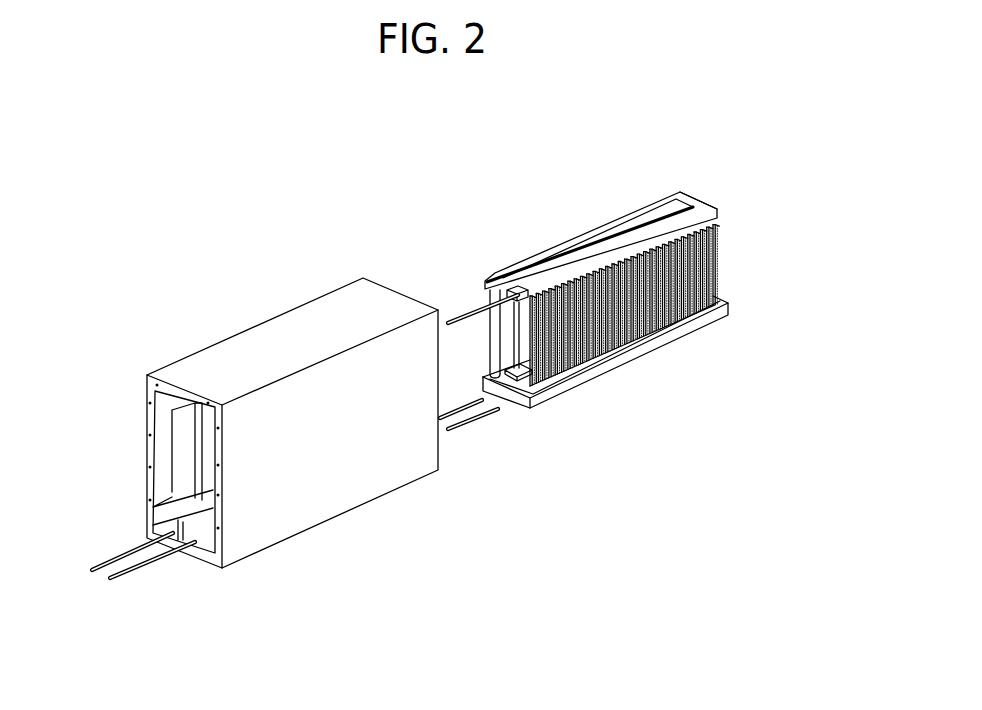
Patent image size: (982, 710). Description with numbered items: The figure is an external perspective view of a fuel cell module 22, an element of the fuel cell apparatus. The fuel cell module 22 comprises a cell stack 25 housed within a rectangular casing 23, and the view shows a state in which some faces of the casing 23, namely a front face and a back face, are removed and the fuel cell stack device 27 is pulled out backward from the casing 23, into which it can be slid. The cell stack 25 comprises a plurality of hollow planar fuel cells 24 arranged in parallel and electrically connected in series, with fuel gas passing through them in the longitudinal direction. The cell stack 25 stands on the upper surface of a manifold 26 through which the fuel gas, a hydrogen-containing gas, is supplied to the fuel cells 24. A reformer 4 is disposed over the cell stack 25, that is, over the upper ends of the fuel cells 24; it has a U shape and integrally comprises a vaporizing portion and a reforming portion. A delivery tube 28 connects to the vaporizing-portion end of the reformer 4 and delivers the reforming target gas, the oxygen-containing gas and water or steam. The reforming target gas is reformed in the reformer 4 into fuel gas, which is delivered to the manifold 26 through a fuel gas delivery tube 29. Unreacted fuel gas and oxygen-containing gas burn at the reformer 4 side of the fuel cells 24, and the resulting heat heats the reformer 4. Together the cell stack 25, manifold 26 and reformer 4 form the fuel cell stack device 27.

The fuel cell module 22 is at (302, 133).
The casing 23 is at (213, 357).
The fuel cell stack device 27 is at (783, 167).
The delivery tube 28 is at (447, 321).
The fuel gas delivery tube 29 is at (491, 298).
The reformer 4 is at (518, 370).
The manifold 26 is at (514, 372).
The fuel cell 24 is at (715, 243).
The cell stack 25 is at (723, 263).